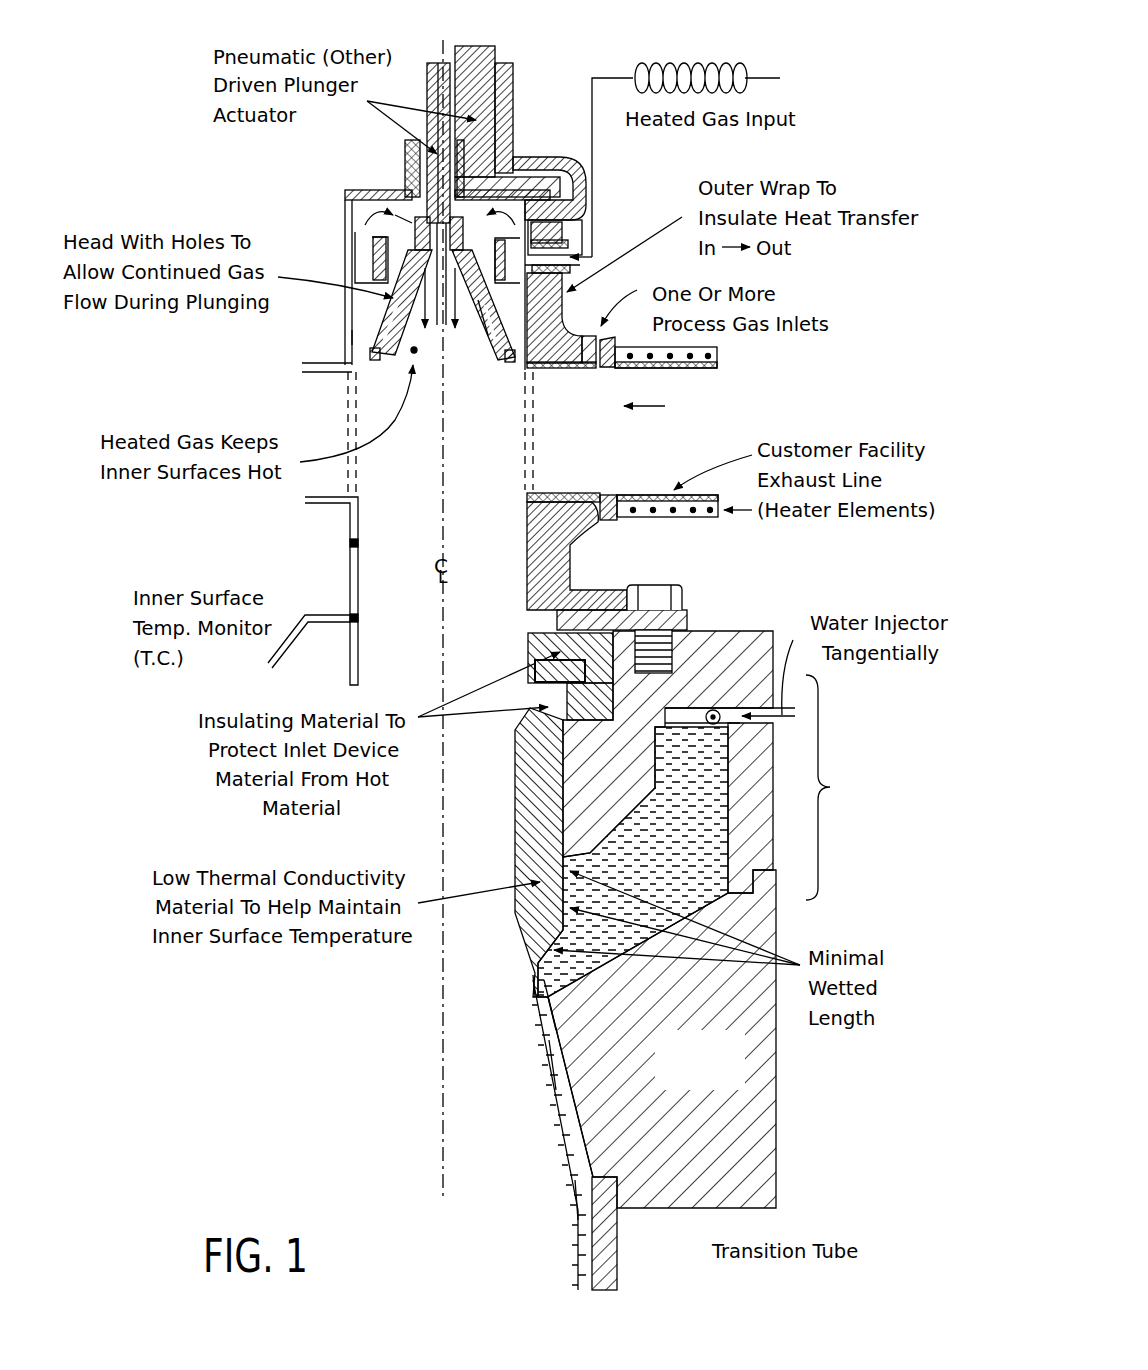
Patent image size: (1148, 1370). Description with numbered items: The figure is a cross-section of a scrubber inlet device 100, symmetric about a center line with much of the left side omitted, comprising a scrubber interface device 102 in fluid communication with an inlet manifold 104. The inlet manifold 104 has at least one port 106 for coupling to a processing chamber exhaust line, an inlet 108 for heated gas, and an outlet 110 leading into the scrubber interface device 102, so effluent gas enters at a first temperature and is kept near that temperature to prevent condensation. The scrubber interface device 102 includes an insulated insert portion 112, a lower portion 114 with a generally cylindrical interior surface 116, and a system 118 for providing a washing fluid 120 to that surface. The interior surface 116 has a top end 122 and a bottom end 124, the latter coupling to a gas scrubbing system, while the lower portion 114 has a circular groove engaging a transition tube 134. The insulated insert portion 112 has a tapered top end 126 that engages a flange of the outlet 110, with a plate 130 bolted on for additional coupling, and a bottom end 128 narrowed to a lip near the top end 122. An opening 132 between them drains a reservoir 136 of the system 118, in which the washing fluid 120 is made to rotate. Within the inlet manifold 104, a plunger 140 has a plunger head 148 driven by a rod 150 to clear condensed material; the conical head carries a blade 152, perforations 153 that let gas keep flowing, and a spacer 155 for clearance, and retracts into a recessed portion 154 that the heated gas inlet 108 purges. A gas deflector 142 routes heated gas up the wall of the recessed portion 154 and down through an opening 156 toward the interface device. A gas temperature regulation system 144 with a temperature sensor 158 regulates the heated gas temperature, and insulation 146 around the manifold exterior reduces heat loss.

The scrubber inlet device 100 is at (150, 92).
The scrubber interface device 102 is at (740, 624).
The inlet manifold 104 is at (360, 194).
The port 106 is at (592, 492).
The inlet 108 is at (608, 254).
The outlet 110 is at (358, 544).
The insulated insert portion 112 is at (535, 780).
The lower portion 114 is at (717, 1112).
The generally cylindrical interior surface 116 is at (560, 1118).
The system for providing a washing fluid 118 is at (830, 787).
The washing fluid 120 is at (545, 1055).
The top end 122 is at (556, 1003).
The bottom end 124 is at (580, 1200).
The top end 126 is at (512, 722).
The bottom end 128 is at (530, 984).
The plate 130 is at (686, 606).
The opening 132 is at (540, 1001).
The transition tube 134 is at (624, 1254).
The reservoir 136 is at (682, 857).
The plunger 140 is at (410, 190).
The gas deflector 142 is at (346, 230).
The gas temperature regulation system 144 is at (307, 614).
The insulation 146 is at (540, 158).
The plunger head 148 is at (485, 343).
The rod 150 is at (443, 54).
The blade 152 is at (503, 362).
The perforations 153 is at (390, 308).
The recessed portion 154 is at (352, 337).
The spacer 155 is at (374, 362).
The opening 156 is at (395, 268).
The temperature sensor 158 is at (360, 619).